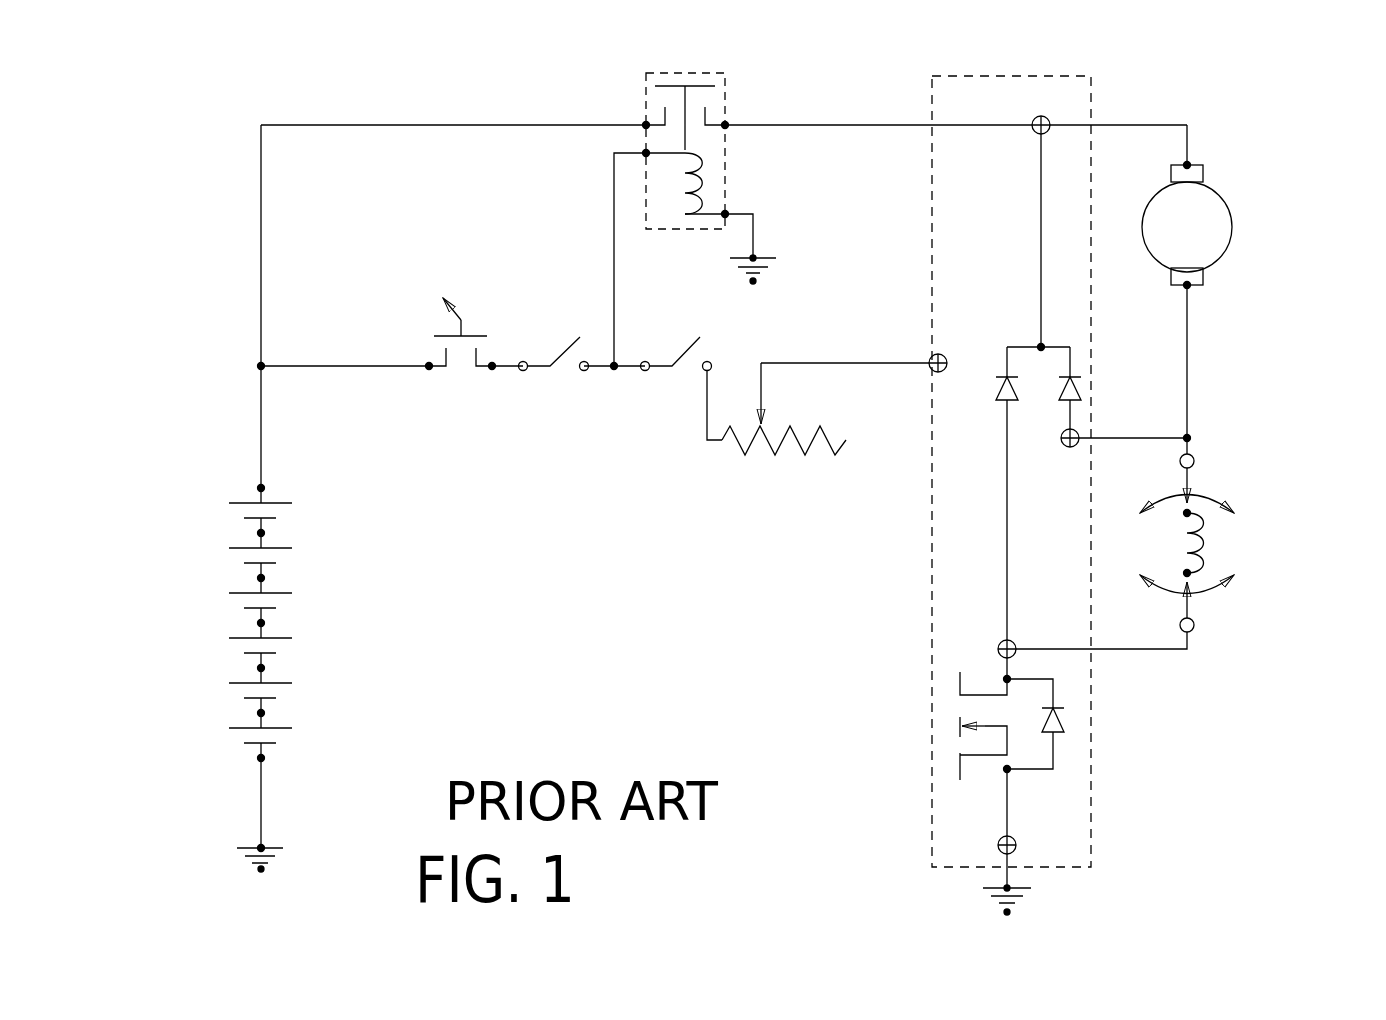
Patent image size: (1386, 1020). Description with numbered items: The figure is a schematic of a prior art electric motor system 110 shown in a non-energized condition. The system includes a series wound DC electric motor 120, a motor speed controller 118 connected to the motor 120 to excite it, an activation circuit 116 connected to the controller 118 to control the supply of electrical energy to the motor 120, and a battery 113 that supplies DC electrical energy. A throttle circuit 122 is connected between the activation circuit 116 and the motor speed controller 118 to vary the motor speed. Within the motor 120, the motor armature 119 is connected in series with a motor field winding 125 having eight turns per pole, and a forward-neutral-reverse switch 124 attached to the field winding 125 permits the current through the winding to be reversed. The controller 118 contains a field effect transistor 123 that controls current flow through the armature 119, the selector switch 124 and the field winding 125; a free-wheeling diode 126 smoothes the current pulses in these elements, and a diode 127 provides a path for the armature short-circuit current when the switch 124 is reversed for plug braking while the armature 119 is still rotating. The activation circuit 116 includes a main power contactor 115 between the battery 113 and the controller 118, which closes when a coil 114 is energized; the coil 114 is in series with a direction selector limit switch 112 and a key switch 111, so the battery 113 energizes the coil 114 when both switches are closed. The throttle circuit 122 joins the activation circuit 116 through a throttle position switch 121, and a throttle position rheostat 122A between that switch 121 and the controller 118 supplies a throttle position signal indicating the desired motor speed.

The electric motor system 110 is at (187, 112).
The key switch 111 is at (461, 290).
The direction selector limit switch 112 is at (553, 337).
The battery 113 is at (290, 525).
The coil 114 is at (703, 183).
The main power contactor 115 is at (635, 133).
The activation circuit 116 is at (493, 178).
The motor speed controller 118 is at (1095, 104).
The motor armature 119 is at (1228, 202).
The DC electric motor 120 is at (1267, 657).
The throttle position switch 121 is at (682, 368).
The throttle circuit 122 is at (804, 403).
The throttle position rheostat 122A is at (738, 463).
The field effect transistor 123 is at (945, 697).
The forward-neutral-reverse switch 124 is at (1198, 482).
The motor field winding 125 is at (1200, 543).
The free-wheeling diode 126 is at (985, 405).
The diode 127 is at (1087, 393).